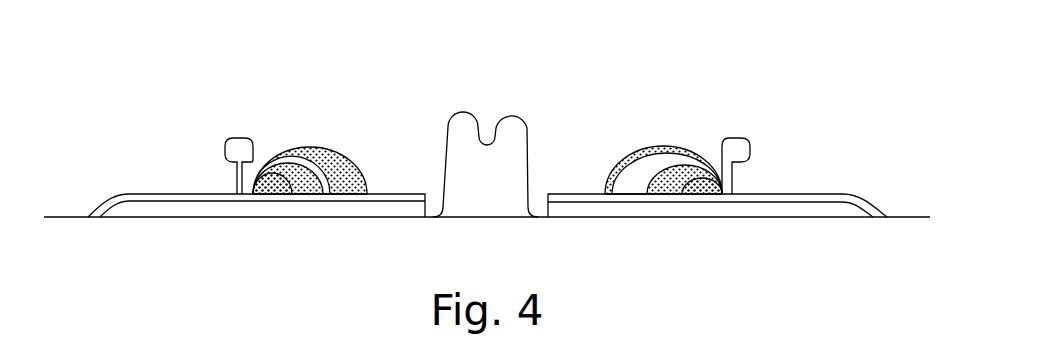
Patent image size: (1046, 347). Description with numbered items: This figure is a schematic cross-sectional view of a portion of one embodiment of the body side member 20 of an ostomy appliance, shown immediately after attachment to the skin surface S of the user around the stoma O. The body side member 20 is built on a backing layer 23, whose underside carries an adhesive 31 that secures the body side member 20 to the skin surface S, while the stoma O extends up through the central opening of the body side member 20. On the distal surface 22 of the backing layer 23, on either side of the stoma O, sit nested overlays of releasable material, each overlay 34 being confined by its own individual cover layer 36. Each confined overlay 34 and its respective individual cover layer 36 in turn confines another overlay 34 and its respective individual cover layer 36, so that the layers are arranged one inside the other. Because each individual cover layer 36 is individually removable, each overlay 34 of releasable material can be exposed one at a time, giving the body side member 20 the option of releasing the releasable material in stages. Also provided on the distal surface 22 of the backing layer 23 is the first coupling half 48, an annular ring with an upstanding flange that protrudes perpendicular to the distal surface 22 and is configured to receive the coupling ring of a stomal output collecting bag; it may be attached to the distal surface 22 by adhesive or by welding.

The body side member 20 is at (198, 93).
The backing layer 23 is at (142, 200).
The distal surface 22 is at (825, 192).
The adhesive 31 is at (717, 201).
The overlay 34 is at (285, 183).
The individual cover layer 36 is at (302, 147).
The first coupling half 48 is at (737, 142).
The stoma O is at (515, 117).
The skin surface S is at (913, 217).